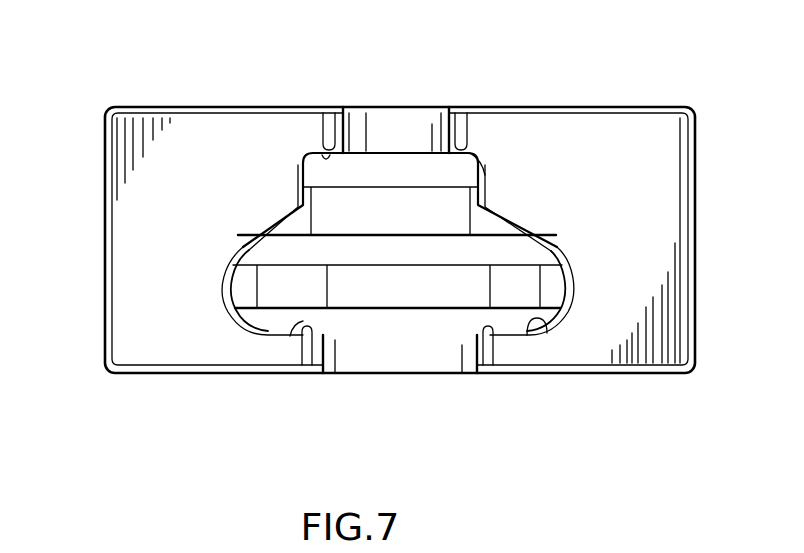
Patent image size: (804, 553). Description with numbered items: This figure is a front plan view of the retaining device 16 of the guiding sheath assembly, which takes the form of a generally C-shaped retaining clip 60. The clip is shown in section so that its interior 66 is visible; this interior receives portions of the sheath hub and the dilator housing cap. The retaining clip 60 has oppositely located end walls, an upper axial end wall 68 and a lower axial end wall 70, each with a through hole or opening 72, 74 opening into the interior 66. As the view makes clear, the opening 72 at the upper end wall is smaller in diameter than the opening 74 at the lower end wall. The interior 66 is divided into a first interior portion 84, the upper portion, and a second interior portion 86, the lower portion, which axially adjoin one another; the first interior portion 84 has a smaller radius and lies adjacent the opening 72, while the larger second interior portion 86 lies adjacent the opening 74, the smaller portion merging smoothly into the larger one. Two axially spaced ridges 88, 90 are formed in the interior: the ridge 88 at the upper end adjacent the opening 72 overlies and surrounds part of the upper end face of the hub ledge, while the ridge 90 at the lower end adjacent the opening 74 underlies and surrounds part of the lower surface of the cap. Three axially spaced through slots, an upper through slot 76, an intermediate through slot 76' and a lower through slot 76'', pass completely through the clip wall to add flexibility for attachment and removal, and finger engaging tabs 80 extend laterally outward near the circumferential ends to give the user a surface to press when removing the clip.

The retaining device 16 is at (148, 392).
The retaining clip 60 is at (630, 90).
The interior 66 is at (390, 290).
The upper axial end wall 68 is at (459, 122).
The lower axial end wall 70 is at (497, 372).
The through hole or opening 72 is at (402, 120).
The through hole or opening 74 is at (405, 362).
The upper through slot 76 is at (400, 191).
The intermediate through slot 76' is at (231, 291).
The lower through slot 76'' is at (399, 333).
The finger engaging tab 80 is at (152, 221).
The first interior portion 84 is at (473, 155).
The second interior portion 86 is at (530, 335).
The ridge 88 is at (327, 122).
The ridge 90 is at (318, 368).